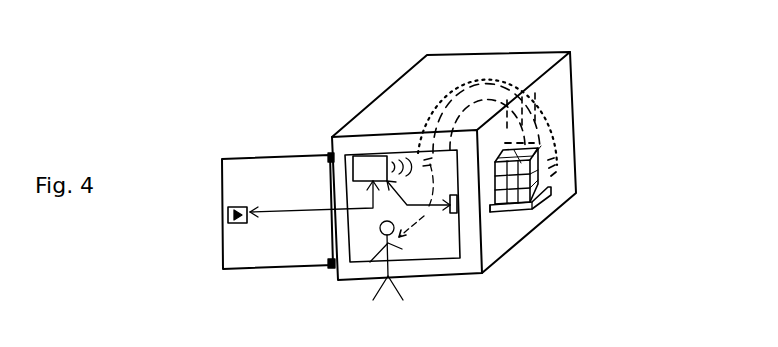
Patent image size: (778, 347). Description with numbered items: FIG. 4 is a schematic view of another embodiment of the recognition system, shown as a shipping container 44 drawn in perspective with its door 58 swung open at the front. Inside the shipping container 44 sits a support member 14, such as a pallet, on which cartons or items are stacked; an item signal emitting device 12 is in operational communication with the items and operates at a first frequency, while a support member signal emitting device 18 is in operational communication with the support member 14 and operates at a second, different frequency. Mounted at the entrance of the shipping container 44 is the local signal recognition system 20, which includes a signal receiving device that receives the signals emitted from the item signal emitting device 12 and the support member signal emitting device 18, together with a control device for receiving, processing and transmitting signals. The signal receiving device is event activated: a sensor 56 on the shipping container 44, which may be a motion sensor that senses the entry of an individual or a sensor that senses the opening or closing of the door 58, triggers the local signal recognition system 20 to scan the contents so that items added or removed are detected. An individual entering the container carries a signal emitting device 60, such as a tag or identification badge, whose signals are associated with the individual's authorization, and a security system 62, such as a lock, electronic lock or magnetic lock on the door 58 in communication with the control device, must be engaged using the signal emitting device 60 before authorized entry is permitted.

The item signal emitting device 12 is at (540, 150).
The support member 14 is at (543, 190).
The support member signal emitting device 18 is at (552, 188).
The local signal recognition system 20 is at (372, 140).
The shipping container 44 is at (573, 53).
The sensor 56 is at (457, 208).
The door 58 is at (265, 158).
The signal emitting device 60 is at (400, 244).
The security system 62 is at (221, 217).